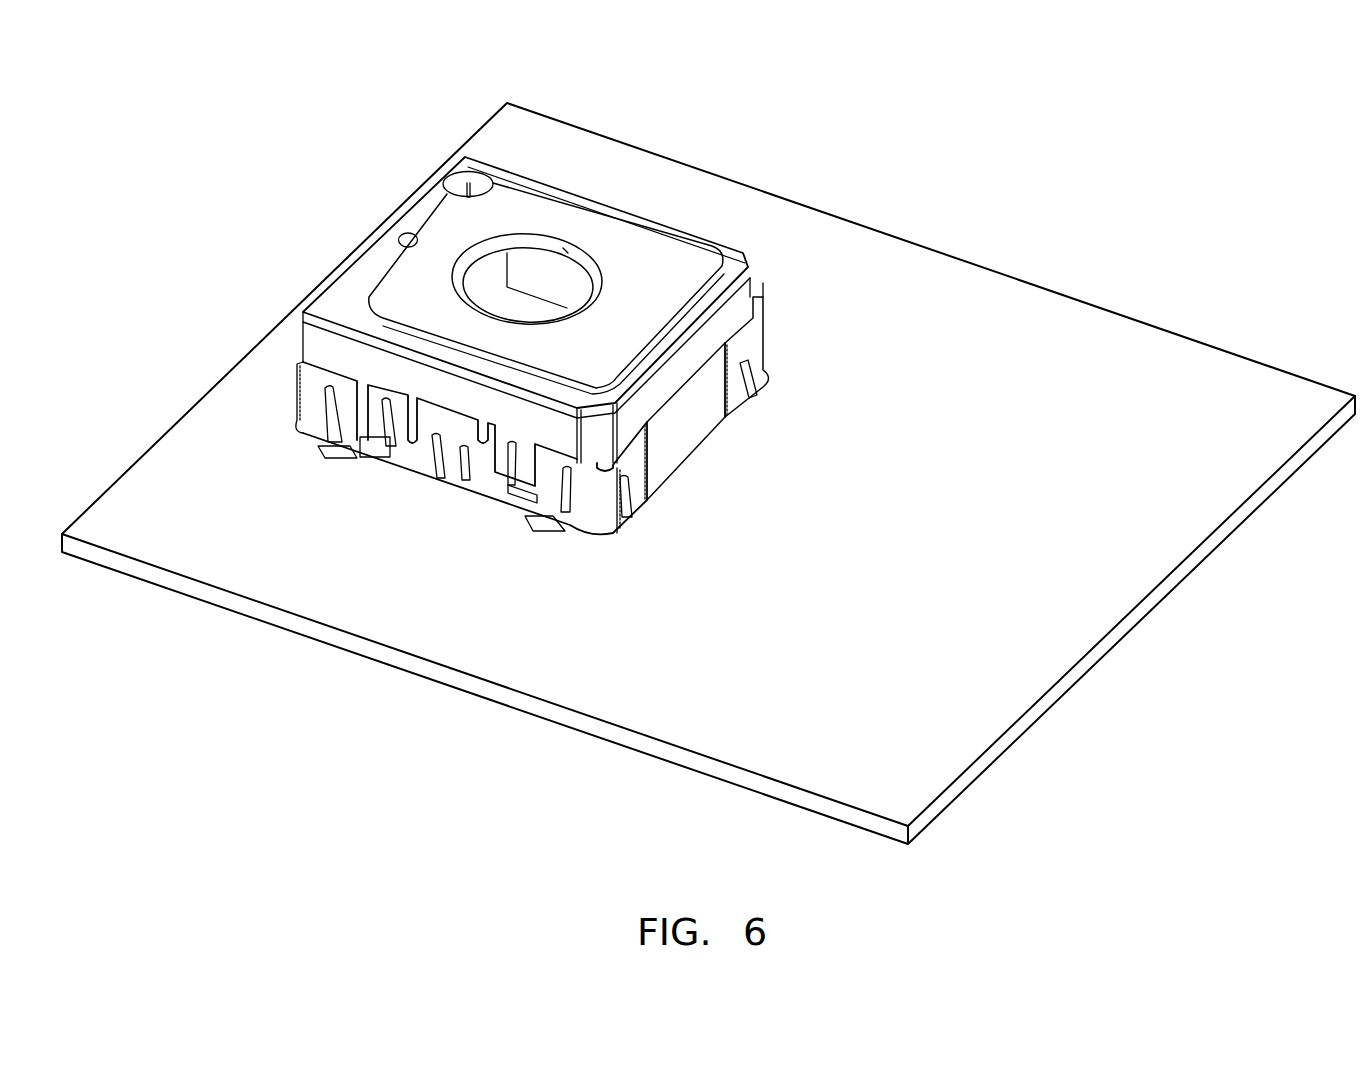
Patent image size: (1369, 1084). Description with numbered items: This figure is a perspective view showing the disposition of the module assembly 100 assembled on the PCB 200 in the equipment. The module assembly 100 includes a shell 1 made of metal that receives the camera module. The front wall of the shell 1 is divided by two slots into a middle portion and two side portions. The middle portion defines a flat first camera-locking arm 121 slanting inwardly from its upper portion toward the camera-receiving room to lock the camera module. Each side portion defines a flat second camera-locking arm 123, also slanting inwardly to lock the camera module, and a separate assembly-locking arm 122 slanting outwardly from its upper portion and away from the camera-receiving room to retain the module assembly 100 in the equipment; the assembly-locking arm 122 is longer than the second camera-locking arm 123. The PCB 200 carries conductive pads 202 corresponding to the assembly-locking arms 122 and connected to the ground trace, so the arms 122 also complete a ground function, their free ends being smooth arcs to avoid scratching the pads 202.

The module assembly 100 is at (642, 263).
The shell 1 is at (767, 323).
The PCB 200 is at (1079, 353).
The assembly-locking arm 122 is at (340, 430).
The second camera-locking arm 123 is at (388, 435).
The first camera-locking arm 121 is at (455, 465).
The conductive pads 202 is at (545, 520).